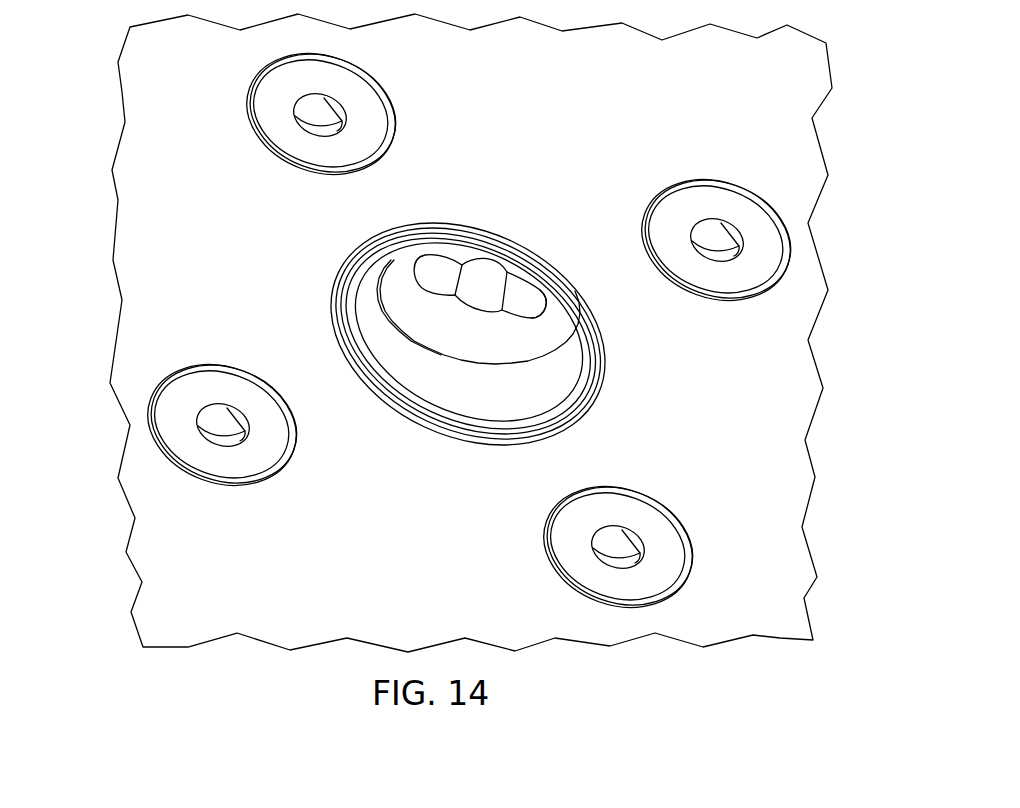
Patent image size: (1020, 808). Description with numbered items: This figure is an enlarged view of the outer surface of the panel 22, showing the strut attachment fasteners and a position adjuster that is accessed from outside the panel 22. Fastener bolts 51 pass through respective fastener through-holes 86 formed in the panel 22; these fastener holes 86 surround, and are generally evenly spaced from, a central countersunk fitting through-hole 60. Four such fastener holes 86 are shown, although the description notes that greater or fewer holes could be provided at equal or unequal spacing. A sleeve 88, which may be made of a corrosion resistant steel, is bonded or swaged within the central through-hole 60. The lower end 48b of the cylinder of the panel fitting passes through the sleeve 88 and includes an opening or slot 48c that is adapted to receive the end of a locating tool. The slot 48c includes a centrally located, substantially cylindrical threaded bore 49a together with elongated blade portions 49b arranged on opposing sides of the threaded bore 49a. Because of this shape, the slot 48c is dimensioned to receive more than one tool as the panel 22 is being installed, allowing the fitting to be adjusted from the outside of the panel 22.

The panel 22 is at (767, 472).
The fastener through-holes 86 is at (240, 89).
The fastener bolts 51 is at (293, 140).
The central countersunk fitting through-hole 60 is at (448, 452).
The sleeve 88 is at (375, 297).
The lower end 48b is at (467, 243).
The elongated blade portions 49b is at (435, 266).
The threaded bore 49a is at (486, 273).
The slot 48c is at (540, 301).